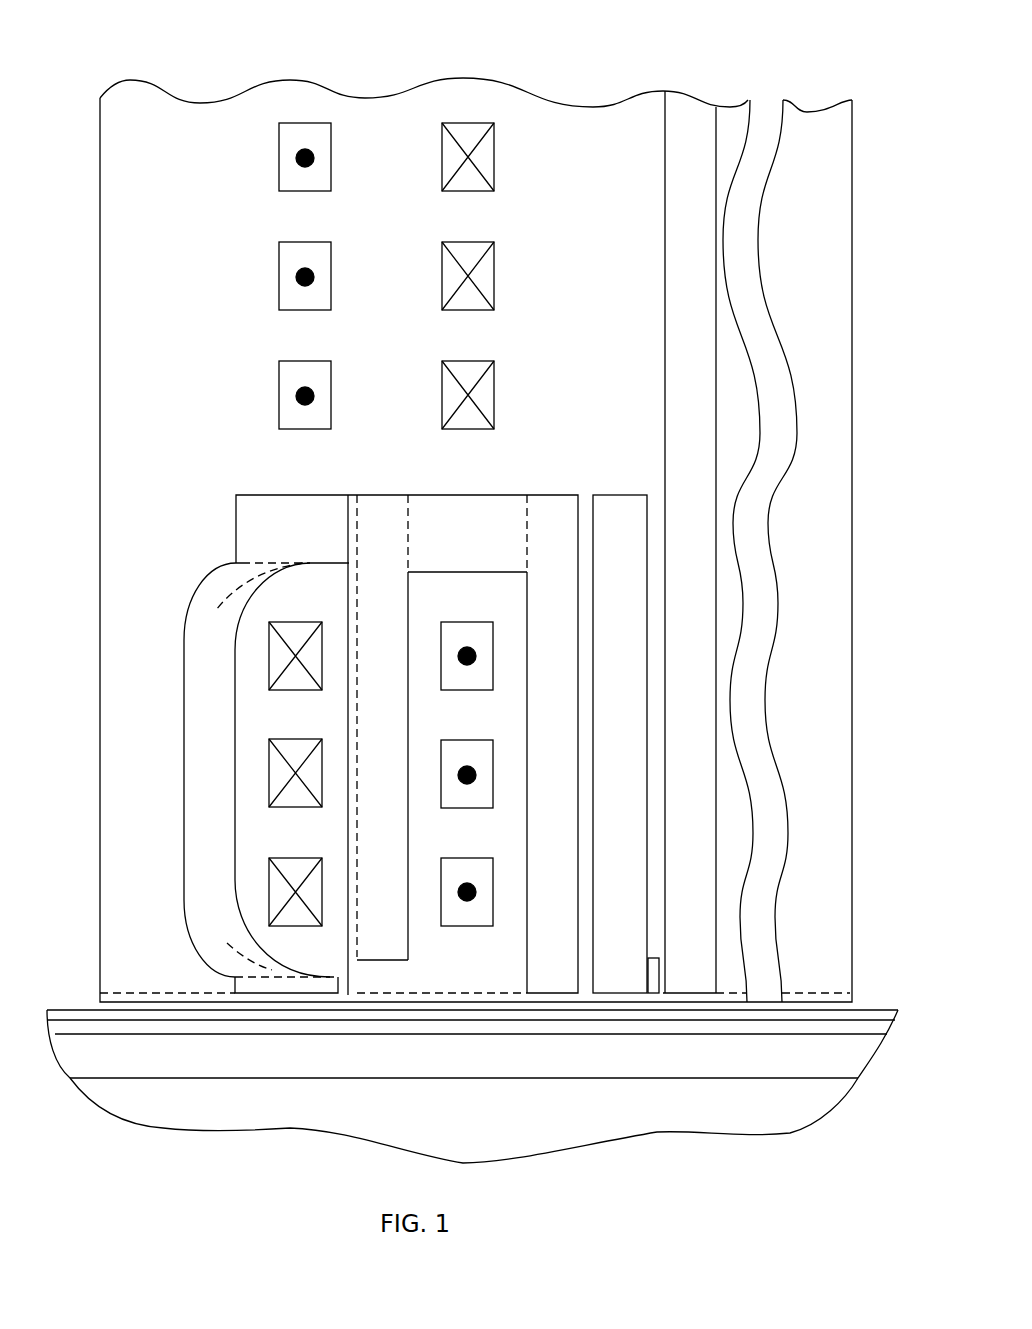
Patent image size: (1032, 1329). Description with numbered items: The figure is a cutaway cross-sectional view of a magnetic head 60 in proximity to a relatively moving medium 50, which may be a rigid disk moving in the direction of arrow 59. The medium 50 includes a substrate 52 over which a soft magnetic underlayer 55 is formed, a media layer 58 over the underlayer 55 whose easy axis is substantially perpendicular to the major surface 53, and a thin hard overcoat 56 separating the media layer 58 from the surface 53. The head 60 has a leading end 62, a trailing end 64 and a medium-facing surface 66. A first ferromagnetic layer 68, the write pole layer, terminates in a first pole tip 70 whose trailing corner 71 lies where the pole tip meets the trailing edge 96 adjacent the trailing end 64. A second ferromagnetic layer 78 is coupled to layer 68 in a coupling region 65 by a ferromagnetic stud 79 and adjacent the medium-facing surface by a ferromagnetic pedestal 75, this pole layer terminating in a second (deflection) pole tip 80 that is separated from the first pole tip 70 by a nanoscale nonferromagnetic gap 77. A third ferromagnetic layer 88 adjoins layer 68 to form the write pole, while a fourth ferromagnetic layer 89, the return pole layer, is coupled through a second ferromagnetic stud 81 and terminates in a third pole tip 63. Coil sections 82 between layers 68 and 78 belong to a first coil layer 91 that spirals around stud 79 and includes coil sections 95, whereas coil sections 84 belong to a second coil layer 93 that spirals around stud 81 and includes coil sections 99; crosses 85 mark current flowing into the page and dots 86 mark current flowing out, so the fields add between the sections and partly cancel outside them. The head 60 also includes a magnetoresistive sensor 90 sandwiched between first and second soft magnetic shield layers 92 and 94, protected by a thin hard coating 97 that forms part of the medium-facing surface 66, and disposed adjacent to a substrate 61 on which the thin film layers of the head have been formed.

The medium 50 is at (813, 1146).
The substrate 52 is at (589, 1120).
The major surface 53 is at (883, 1007).
The soft magnetic underlayer 55 is at (473, 1068).
The overcoat 56 is at (738, 1012).
The media layer 58 is at (200, 1030).
The arrow 59 is at (353, 1112).
The magnetic head 60 is at (115, 72).
The substrate 61 is at (743, 449).
The leading end 62 is at (854, 825).
The third pole tip 63 is at (551, 1004).
The trailing end 64 is at (98, 823).
The coupling region 65 is at (578, 490).
The medium-facing surface 66 is at (131, 1004).
The first ferromagnetic layer 68 is at (357, 713).
The first pole tip 70 is at (353, 996).
The trailing corner 71 is at (352, 990).
The ferromagnetic pedestal 75 is at (235, 942).
The nonferromagnetic gap 77 is at (341, 996).
The second ferromagnetic layer 78 is at (185, 760).
The ferromagnetic stud 79 is at (263, 770).
The second pole tip 80 is at (269, 995).
The second ferromagnetic stud 81 is at (479, 542).
The coil sections 82 is at (269, 860).
The coil sections 84 is at (492, 800).
The crosses 85 is at (475, 160).
The dots 86 is at (300, 158).
The third ferromagnetic layer 88 is at (394, 617).
The fourth ferromagnetic layer 89 is at (564, 792).
The magnetoresistive sensor 90 is at (653, 965).
The first coil layer 91 is at (305, 114).
The first soft magnetic shield layer 92 is at (702, 787).
The second coil layer 93 is at (465, 114).
The second soft magnetic shield layer 94 is at (632, 787).
The coil sections 95 is at (279, 365).
The trailing edge 96 is at (346, 713).
The thin hard coating 97 is at (506, 993).
The coil sections 99 is at (493, 305).